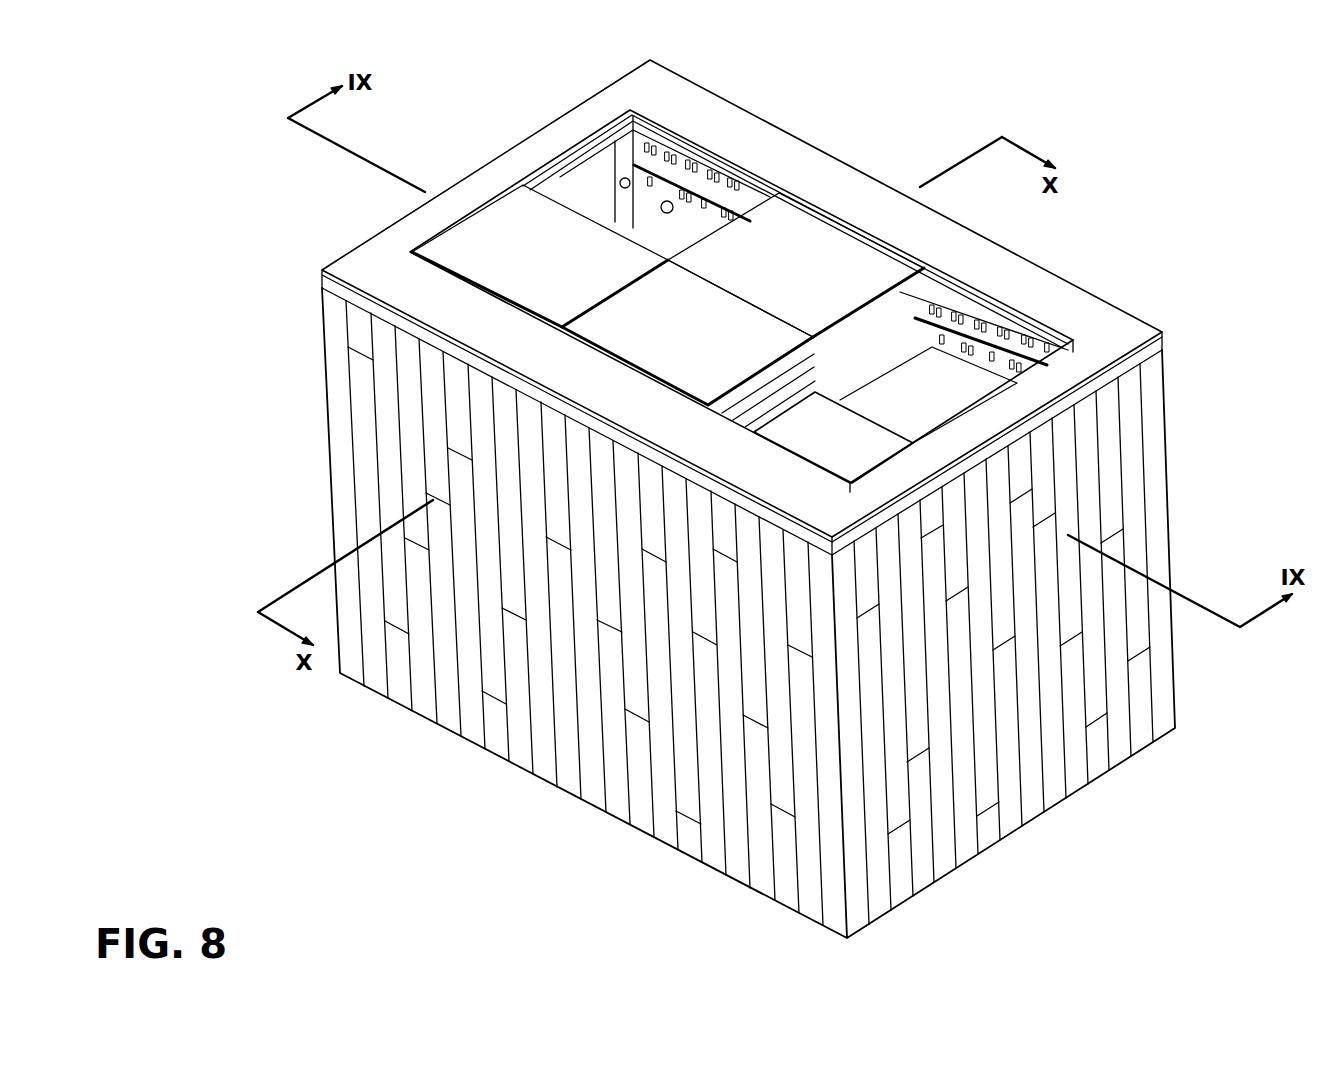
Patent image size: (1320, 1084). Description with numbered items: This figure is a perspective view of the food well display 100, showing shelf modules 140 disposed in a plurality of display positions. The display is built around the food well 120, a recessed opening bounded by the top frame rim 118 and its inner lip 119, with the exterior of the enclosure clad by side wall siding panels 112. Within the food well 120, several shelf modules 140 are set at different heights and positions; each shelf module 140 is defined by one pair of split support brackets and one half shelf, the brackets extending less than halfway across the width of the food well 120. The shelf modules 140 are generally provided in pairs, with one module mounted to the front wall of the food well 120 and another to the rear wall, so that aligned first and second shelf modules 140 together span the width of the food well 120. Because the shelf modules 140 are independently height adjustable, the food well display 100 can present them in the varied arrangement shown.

The food well display 100 is at (1160, 101).
The side wall siding panels 112 is at (1168, 487).
The top frame rim 118 is at (1108, 310).
The inner lip of top frame 119 is at (1010, 307).
The food well 120 is at (693, 180).
The shelf module 140 is at (657, 338).